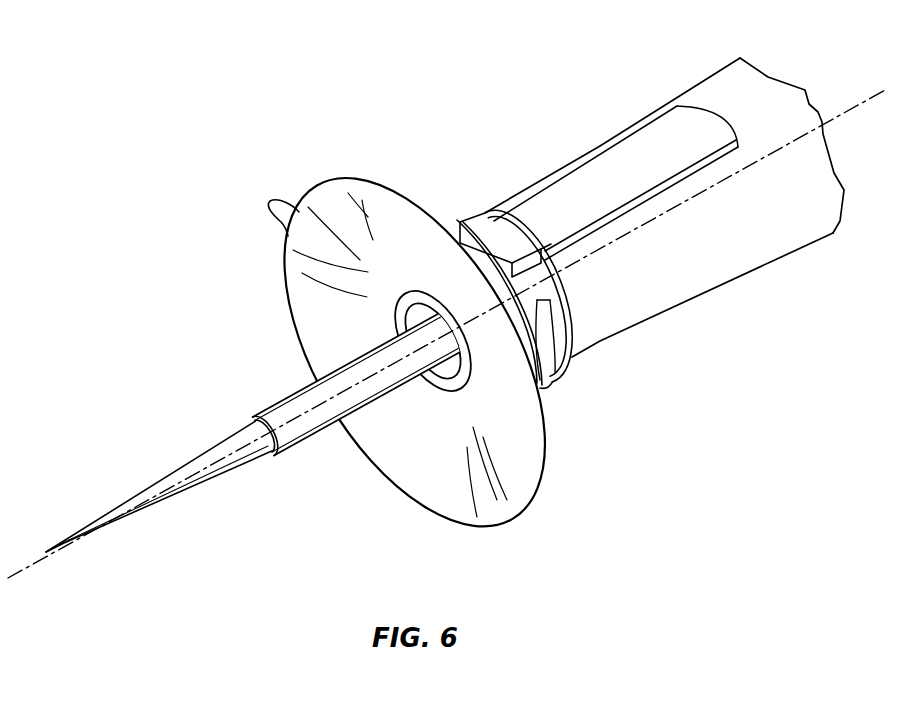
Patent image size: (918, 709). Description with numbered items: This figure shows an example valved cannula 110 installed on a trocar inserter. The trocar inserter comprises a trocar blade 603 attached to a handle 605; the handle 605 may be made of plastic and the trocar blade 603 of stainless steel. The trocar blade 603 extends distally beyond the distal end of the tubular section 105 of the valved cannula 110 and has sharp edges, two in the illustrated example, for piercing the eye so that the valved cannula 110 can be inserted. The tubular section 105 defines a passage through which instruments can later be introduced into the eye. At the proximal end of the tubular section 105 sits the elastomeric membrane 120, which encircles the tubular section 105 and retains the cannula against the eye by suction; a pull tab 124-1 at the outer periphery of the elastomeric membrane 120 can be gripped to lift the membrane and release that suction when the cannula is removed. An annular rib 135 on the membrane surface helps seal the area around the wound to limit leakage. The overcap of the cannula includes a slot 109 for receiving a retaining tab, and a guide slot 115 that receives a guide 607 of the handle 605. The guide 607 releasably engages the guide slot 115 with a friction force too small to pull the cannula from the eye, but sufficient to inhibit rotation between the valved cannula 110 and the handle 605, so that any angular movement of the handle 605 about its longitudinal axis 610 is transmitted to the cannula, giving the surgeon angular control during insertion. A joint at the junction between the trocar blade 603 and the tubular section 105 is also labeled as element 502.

The trocar blade 603 is at (160, 467).
The tubular section 105 is at (297, 390).
The cannula hub junction 502 is at (247, 420).
The valved cannula 110 is at (310, 437).
The elastomeric membrane 120 is at (532, 497).
The annular rib 135 is at (460, 373).
The pull tab 124-1 is at (270, 208).
The guide slot 115 is at (458, 230).
The slot 109 is at (545, 360).
The guide 607 is at (575, 183).
The handle 605 is at (685, 285).
The longitudinal axis 610 is at (868, 100).